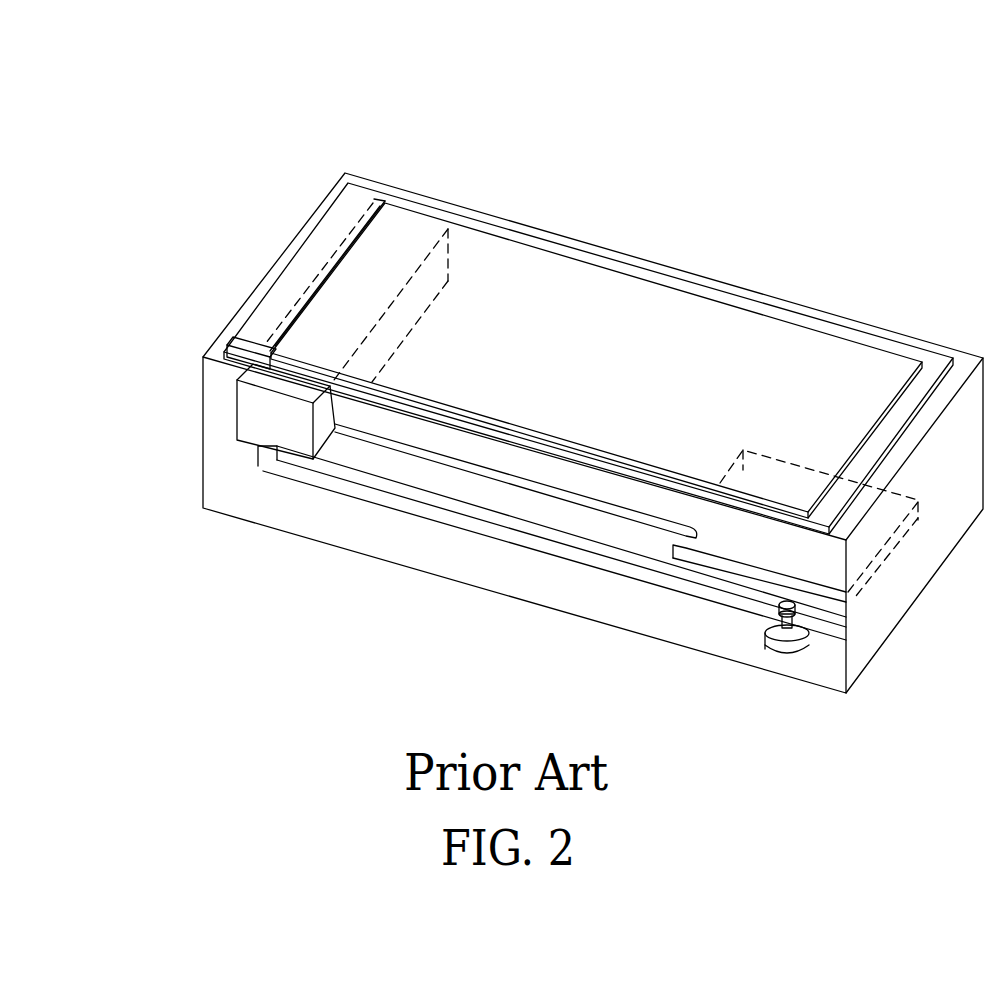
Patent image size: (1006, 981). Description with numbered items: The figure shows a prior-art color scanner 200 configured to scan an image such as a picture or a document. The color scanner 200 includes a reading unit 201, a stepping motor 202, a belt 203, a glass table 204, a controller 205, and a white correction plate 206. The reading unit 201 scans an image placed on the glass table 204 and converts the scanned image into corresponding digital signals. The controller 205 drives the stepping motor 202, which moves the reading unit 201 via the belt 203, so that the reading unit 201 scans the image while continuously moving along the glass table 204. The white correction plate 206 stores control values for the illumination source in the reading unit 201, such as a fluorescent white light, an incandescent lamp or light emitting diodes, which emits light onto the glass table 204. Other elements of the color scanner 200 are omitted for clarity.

The color scanner 200 is at (549, 394).
The reading unit 201 is at (247, 417).
The stepping motor 202 is at (786, 657).
The belt 203 is at (507, 535).
The glass table 204 is at (927, 349).
The controller 205 is at (722, 548).
The white correction plate 206 is at (334, 217).